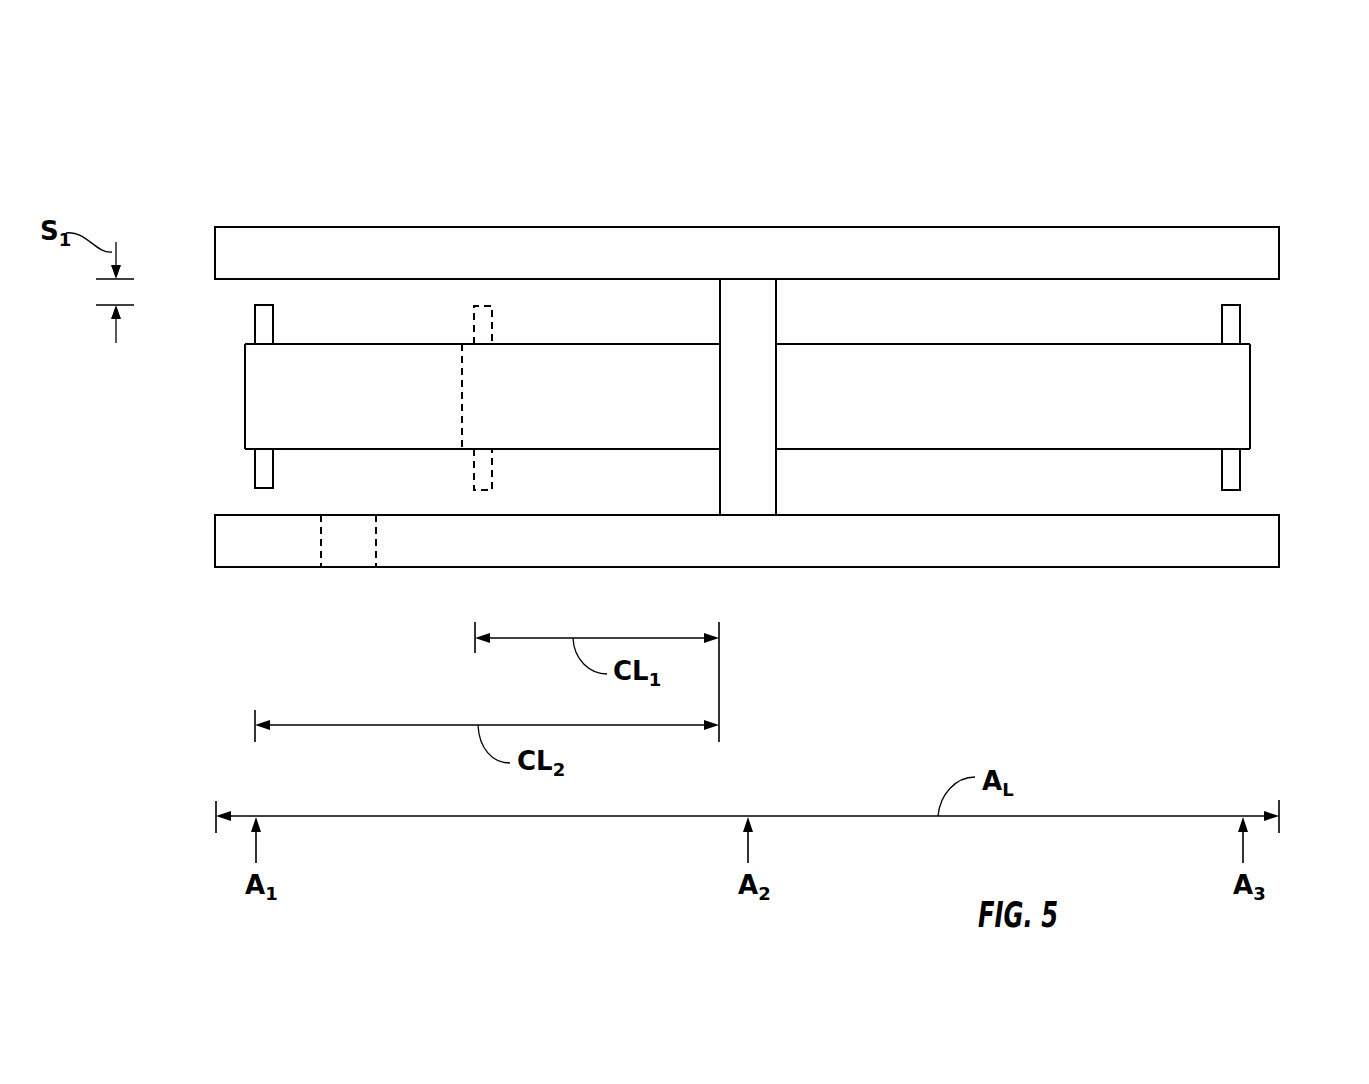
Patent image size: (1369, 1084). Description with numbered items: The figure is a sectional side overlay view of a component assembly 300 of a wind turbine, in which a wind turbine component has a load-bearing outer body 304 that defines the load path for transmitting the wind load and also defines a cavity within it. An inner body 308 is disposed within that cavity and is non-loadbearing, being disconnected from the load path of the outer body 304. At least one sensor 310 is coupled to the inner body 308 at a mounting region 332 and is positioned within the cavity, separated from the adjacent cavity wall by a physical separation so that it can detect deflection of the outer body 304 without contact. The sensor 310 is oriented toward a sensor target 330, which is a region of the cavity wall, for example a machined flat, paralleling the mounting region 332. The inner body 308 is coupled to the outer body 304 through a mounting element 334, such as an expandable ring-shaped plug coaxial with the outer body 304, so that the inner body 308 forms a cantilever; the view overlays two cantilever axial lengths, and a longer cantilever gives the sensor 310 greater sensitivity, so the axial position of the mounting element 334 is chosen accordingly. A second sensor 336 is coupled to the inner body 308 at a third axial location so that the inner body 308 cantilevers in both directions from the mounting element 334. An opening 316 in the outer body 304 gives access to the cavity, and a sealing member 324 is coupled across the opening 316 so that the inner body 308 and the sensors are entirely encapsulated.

The component assembly 300 is at (1256, 124).
The outer body 304 is at (283, 245).
The inner body 308 is at (622, 360).
The sensor 310 is at (273, 326).
The opening 316 is at (363, 542).
The sealing member 324 is at (337, 567).
The sensor target 330 is at (249, 508).
The mounting region 332 is at (256, 434).
The mounting element 334 is at (753, 292).
The second sensor 336 is at (1232, 326).